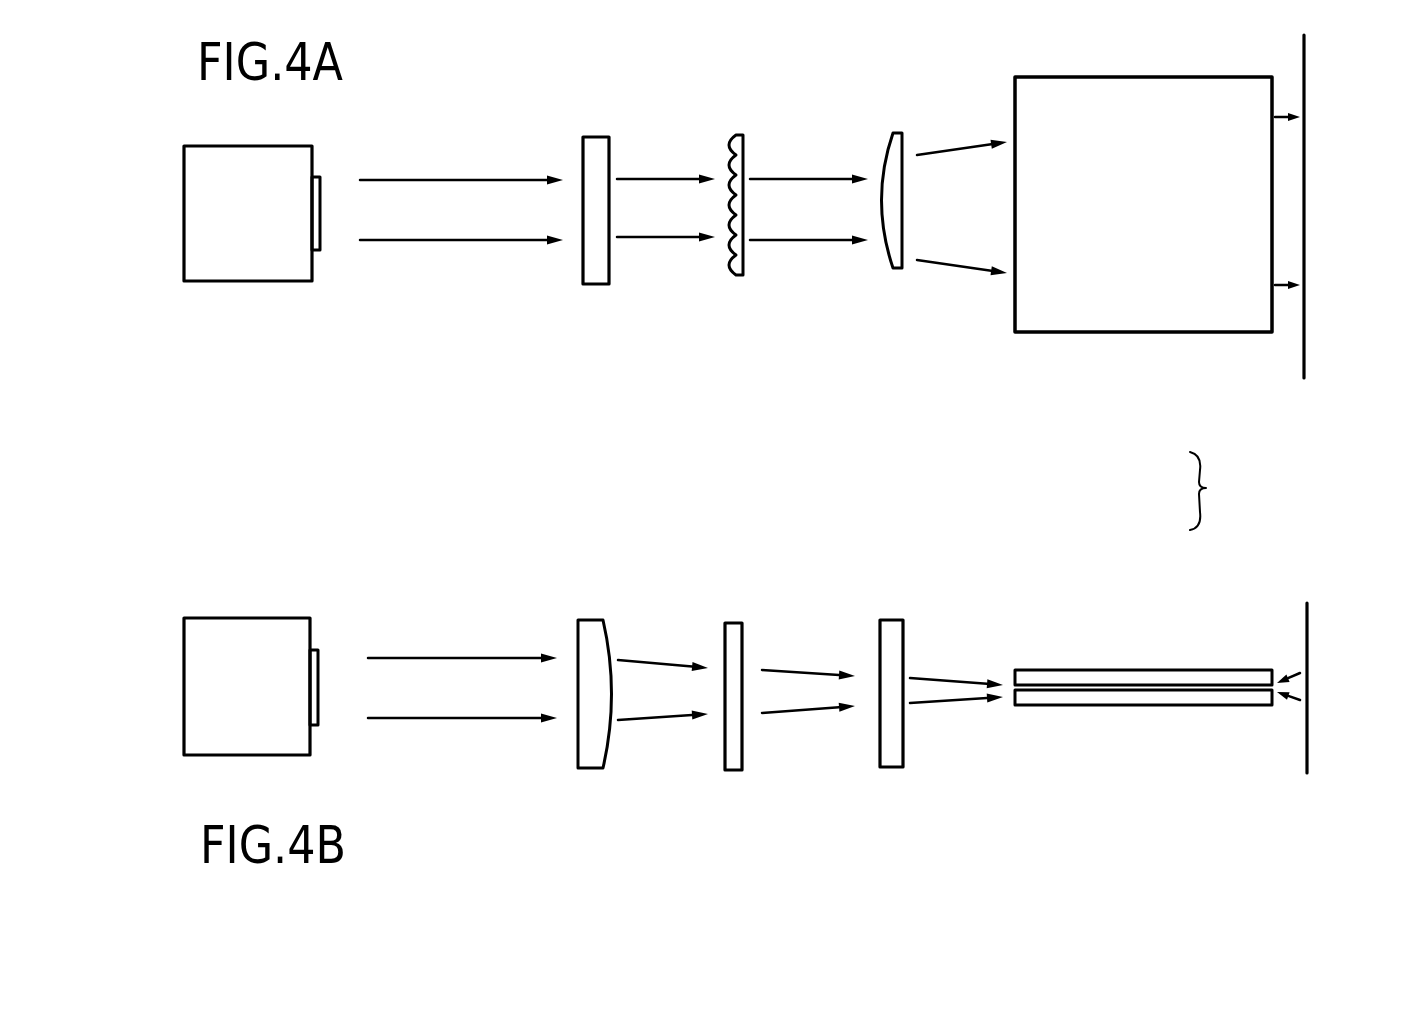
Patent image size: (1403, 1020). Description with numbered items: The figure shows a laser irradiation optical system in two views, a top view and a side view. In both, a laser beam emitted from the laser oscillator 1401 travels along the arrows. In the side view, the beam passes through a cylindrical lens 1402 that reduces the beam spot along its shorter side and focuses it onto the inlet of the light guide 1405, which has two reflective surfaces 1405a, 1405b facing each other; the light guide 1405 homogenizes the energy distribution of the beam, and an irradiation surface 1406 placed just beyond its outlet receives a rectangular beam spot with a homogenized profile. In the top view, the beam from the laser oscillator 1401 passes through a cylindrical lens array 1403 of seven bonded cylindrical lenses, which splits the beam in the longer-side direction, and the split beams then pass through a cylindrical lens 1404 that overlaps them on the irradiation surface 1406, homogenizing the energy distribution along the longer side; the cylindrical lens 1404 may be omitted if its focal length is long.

In FIG. 4A, the laser oscillator 1401 is at (243, 225).
In FIG. 4B, the laser oscillator 1401 is at (277, 678).
In FIG. 4A, the cylindrical lens 1402 is at (597, 277).
In FIG. 4B, the cylindrical lens 1402 is at (596, 625).
In FIG. 4A, the cylindrical lens array 1403 is at (740, 278).
In FIG. 4B, the cylindrical lens array 1403 is at (730, 628).
In FIG. 4A, the cylindrical lens 1404 is at (895, 258).
In FIG. 4B, the cylindrical lens 1404 is at (896, 628).
In FIG. 4A, the light guide 1405 is at (1195, 297).
In FIG. 4B, the reflective surface 1405a is at (1027, 677).
In FIG. 4B, the reflective surface 1405b is at (1031, 700).
In FIG. 4A, the irradiation surface 1406 is at (1304, 372).
In FIG. 4B, the irradiation surface 1406 is at (1307, 633).